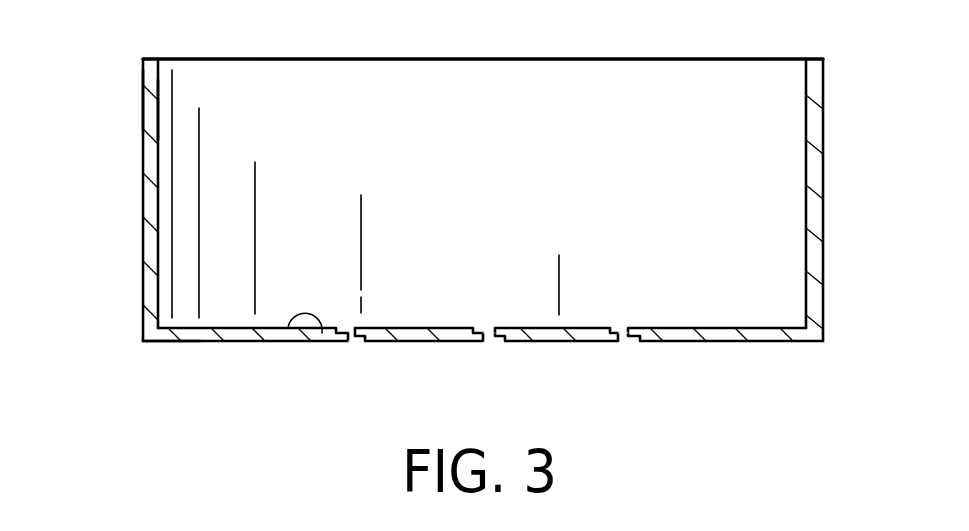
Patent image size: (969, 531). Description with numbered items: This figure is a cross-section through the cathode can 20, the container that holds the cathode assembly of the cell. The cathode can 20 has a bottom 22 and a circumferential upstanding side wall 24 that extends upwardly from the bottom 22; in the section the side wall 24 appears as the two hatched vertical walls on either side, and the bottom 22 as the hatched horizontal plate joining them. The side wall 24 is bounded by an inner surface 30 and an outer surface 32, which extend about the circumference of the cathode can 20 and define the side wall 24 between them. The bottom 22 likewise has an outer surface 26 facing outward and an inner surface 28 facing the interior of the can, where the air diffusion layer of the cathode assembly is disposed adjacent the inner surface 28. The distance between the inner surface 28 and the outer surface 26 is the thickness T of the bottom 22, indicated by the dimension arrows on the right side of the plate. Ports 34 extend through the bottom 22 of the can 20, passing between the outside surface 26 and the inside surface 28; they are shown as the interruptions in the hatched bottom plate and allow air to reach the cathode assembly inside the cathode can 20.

The cathode can 20 is at (824, 106).
The bottom 22 is at (248, 343).
The side wall 24 is at (142, 125).
The outer surface 26 is at (188, 342).
The inner surface 28 is at (322, 333).
The inner surface 30 is at (231, 42).
The outer surface 32 is at (143, 98).
The ports 34 is at (490, 338).
The thickness T is at (695, 282).